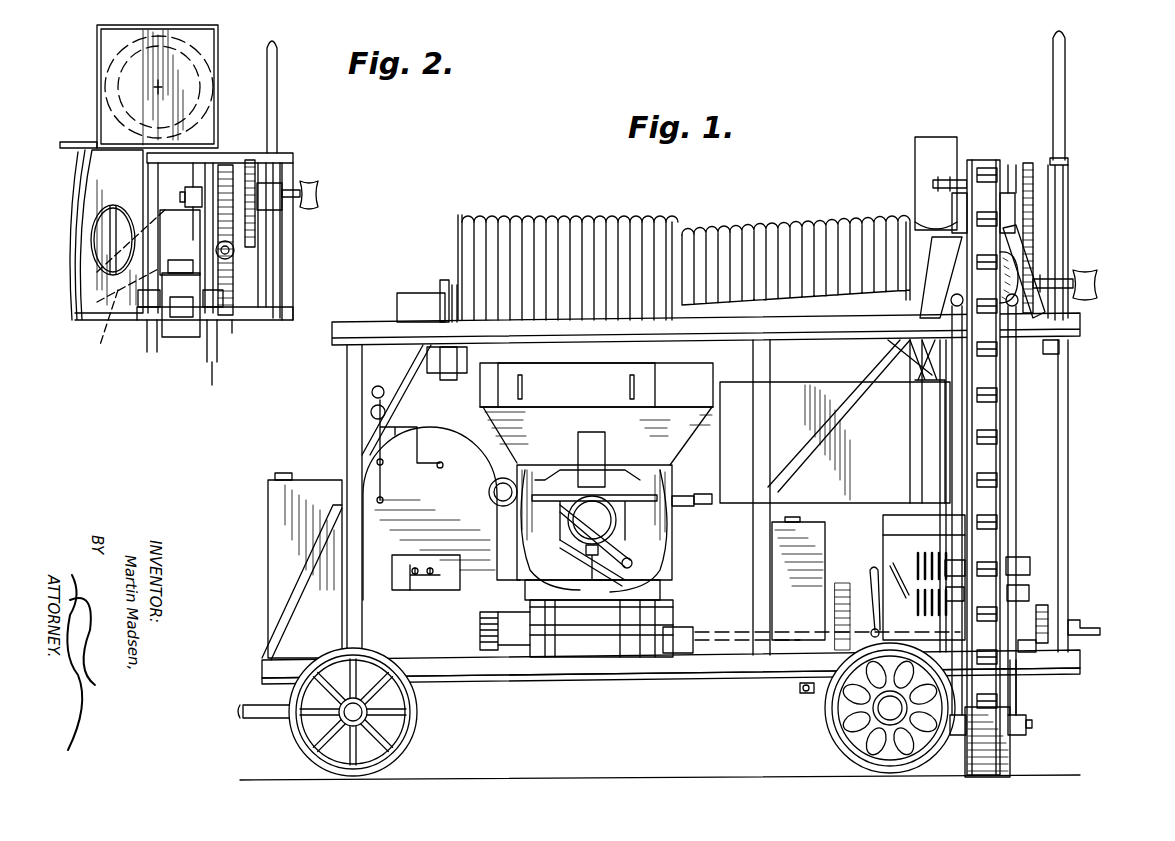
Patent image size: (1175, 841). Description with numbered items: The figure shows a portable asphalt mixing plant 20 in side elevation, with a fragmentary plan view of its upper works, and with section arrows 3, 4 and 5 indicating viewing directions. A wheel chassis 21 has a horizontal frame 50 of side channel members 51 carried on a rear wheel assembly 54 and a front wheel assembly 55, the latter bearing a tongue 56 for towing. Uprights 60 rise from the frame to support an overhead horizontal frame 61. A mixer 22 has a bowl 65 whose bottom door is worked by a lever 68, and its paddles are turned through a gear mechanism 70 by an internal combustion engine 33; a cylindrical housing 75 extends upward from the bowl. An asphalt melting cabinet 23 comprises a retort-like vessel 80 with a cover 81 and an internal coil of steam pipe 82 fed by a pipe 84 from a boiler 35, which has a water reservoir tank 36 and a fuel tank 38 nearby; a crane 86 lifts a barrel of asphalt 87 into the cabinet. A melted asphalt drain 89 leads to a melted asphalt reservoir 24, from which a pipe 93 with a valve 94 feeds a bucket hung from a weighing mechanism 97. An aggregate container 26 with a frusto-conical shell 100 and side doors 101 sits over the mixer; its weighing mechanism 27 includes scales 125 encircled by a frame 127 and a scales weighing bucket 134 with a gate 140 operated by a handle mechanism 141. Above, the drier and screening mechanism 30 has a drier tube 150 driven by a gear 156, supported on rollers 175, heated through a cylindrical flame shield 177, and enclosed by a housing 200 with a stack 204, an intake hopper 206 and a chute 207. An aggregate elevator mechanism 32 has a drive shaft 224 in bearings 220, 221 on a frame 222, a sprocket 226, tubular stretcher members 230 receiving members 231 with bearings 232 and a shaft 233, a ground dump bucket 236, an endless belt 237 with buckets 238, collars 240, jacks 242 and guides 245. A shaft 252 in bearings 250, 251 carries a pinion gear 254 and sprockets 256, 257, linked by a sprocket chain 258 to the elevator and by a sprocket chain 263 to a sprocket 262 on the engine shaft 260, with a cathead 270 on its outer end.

In FIG. 1, the portable asphalt mixing plant 20 is at (490, 208).
In FIG. 1, the section line 3 is at (212, 483).
In FIG. 1, the section line 4 is at (1045, 640).
In FIG. 1, the section line 5 is at (605, 193).
In FIG. 1, the wheel chassis 21 is at (723, 660).
In FIG. 1, the mixer 22 is at (578, 655).
In FIG. 2, the asphalt melting cabinet 23 is at (206, 58).
In FIG. 1, the melted asphalt reservoir 24 is at (871, 492).
In FIG. 1, the aggregate container 26 is at (648, 442).
In FIG. 1, the weighing mechanism 27 is at (630, 542).
In FIG. 1, the drier and screening mechanism 30 is at (688, 228).
In FIG. 1, the aggregate elevator mechanism 32 is at (990, 422).
In FIG. 1, the internal combustion engine 33 is at (893, 566).
In FIG. 1, the boiler 35 is at (384, 540).
In FIG. 1, the water reservoir tank 36 is at (276, 596).
In FIG. 1, the fuel tank 38 is at (796, 549).
In FIG. 1, the horizontal frame 50 is at (262, 666).
In FIG. 1, the side channel members 51 is at (262, 681).
In FIG. 1, the rear wheel assembly 54 is at (845, 747).
In FIG. 1, the front wheel assembly 55 is at (293, 754).
In FIG. 1, the tongue 56 is at (250, 710).
In FIG. 1, the uprights 60 is at (347, 387).
In FIG. 2, the horizontal frame 61 is at (298, 165).
In FIG. 1, the horizontal frame 61 is at (828, 335).
In FIG. 1, the bowl 65 is at (615, 657).
In FIG. 1, the lever 68 is at (455, 548).
In FIG. 1, the gear mechanism 70 is at (820, 676).
In FIG. 1, the cylindrical housing 75 is at (670, 540).
In FIG. 2, the retort-like vessel 80 is at (97, 120).
In FIG. 2, the cover 81 is at (107, 43).
In FIG. 2, the coil of steam pipe 82 is at (107, 68).
In FIG. 2, the pipe 84 is at (74, 148).
In FIG. 2, the crane 86 is at (277, 46).
In FIG. 1, the crane 86 is at (1062, 79).
In FIG. 2, the barrel of asphalt 87 is at (118, 92).
In FIG. 1, the melted asphalt drain 89 is at (920, 380).
In FIG. 1, the pipe 93 is at (690, 497).
In FIG. 1, the valve 94 is at (712, 500).
In FIG. 1, the weighing mechanism 97 is at (489, 486).
In FIG. 1, the frusto-conical shell 100 is at (474, 448).
In FIG. 1, the side doors 101 is at (656, 392).
In FIG. 1, the scales 125 is at (560, 550).
In FIG. 1, the frame 127 is at (603, 505).
In FIG. 1, the scales weighing bucket 134 is at (660, 526).
In FIG. 1, the gate 140 is at (582, 586).
In FIG. 1, the handle mechanism 141 is at (633, 565).
In FIG. 2, the drier tube 150 is at (101, 225).
In FIG. 2, the gear 156 is at (230, 266).
In FIG. 1, the rollers 175 is at (450, 380).
In FIG. 1, the cylindrical flame shield 177 is at (420, 293).
In FIG. 2, the housing 200 is at (78, 212).
In FIG. 1, the housing 200 is at (814, 236).
In FIG. 2, the stack 204 is at (98, 252).
In FIG. 1, the stack 204 is at (928, 158).
In FIG. 2, the intake hopper 206 is at (165, 218).
In FIG. 1, the intake hopper 206 is at (1005, 160).
In FIG. 2, the chute 207 is at (95, 322).
In FIG. 2, the bearing 220 is at (147, 308).
In FIG. 1, the bearing 220 is at (956, 172).
In FIG. 2, the bearing 221 is at (213, 372).
In FIG. 1, the bearing 221 is at (1016, 178).
In FIG. 1, the frame 222 is at (927, 297).
In FIG. 1, the drive shaft 224 is at (937, 184).
In FIG. 2, the sprocket 226 is at (231, 324).
In FIG. 1, the sprocket 226 is at (1035, 186).
In FIG. 2, the tubular stretcher members 230 is at (148, 355).
In FIG. 1, the tubular stretcher members 230 is at (960, 525).
In FIG. 1, the members 231 is at (1020, 703).
In FIG. 1, the bearings 232 is at (958, 737).
In FIG. 1, the shaft 233 is at (1033, 724).
In FIG. 1, the ground dump bucket 236 is at (996, 772).
In FIG. 2, the endless belt 237 is at (199, 340).
In FIG. 1, the endless belt 237 is at (992, 458).
In FIG. 2, the buckets 238 is at (185, 337).
In FIG. 1, the buckets 238 is at (993, 486).
In FIG. 1, the collars 240 is at (1031, 592).
In FIG. 1, the jacks 242 is at (1031, 565).
In FIG. 1, the guides 245 is at (1026, 656).
In FIG. 2, the bearing 250 is at (193, 190).
In FIG. 2, the bearing 251 is at (330, 166).
In FIG. 2, the shaft 252 is at (320, 197).
In FIG. 2, the pinion gear 254 is at (215, 185).
In FIG. 2, the sprocket 256 is at (250, 172).
In FIG. 1, the sprocket 256 is at (1032, 262).
In FIG. 2, the sprocket 257 is at (278, 163).
In FIG. 2, the sprocket chain 258 is at (235, 255).
In FIG. 1, the sprocket chain 258 is at (1031, 222).
In FIG. 1, the shaft 260 is at (1101, 634).
In FIG. 1, the sprocket 262 is at (1049, 628).
In FIG. 1, the sprocket chain 263 is at (1060, 350).
In FIG. 2, the cathead 270 is at (320, 183).
In FIG. 1, the cathead 270 is at (1099, 283).